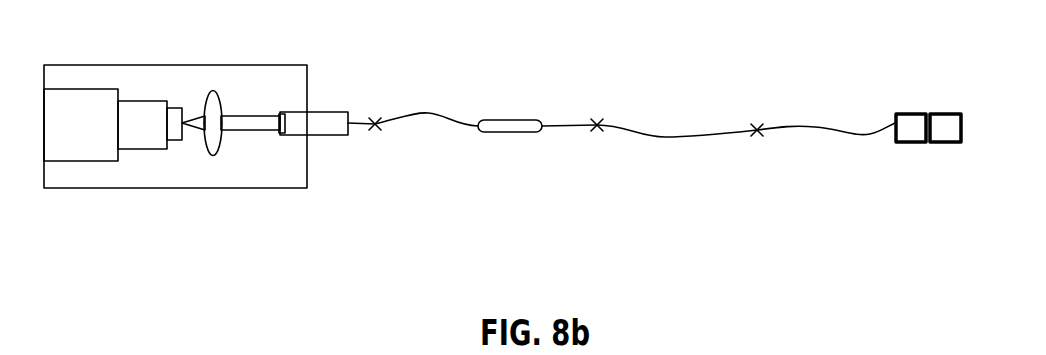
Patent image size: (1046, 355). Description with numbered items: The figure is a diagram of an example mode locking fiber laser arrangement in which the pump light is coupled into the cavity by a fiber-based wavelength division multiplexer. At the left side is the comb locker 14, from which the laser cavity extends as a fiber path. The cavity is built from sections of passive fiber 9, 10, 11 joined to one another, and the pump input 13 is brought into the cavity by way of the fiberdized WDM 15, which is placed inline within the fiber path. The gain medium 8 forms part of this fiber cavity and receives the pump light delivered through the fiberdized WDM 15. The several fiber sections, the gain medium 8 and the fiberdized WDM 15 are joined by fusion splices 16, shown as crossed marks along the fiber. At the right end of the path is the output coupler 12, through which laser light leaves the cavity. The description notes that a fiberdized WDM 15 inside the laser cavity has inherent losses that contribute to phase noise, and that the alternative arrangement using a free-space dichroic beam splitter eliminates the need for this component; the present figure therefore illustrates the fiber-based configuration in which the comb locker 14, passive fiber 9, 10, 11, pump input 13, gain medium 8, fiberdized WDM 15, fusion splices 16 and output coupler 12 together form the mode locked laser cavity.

The gain medium 8 is at (763, 170).
The passive fiber 9 is at (485, 57).
The passive fiber 10 is at (598, 60).
The passive fiber 11 is at (895, 90).
The output coupler 12 is at (912, 143).
The pump input 13 is at (597, 125).
The comb locker 14 is at (263, 189).
The fiberdized WDM 15 is at (500, 120).
The fusion splices 16 is at (597, 125).